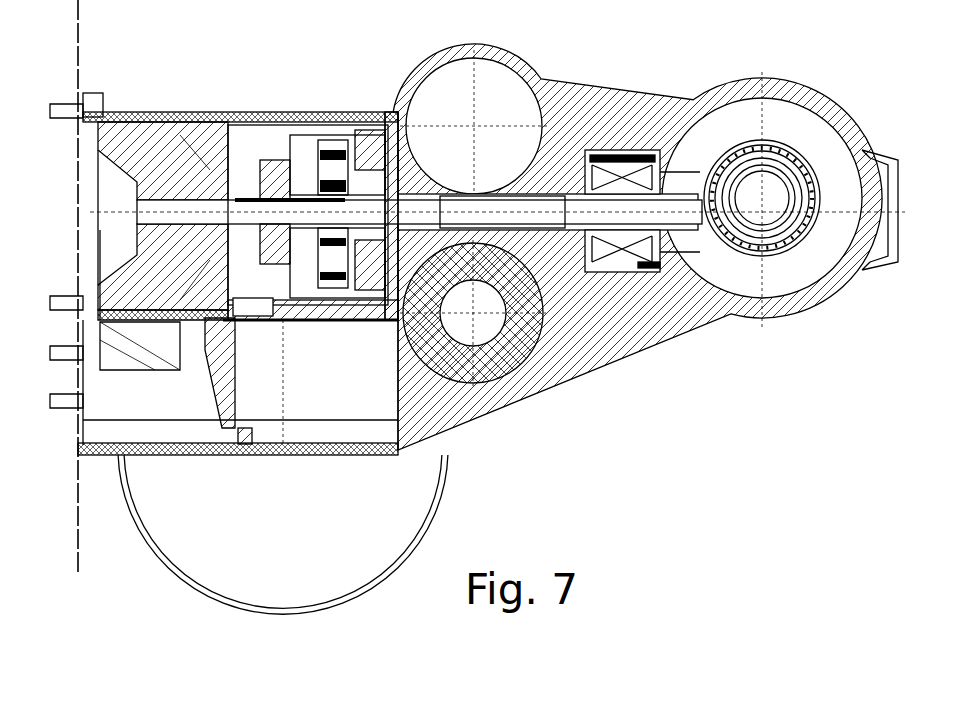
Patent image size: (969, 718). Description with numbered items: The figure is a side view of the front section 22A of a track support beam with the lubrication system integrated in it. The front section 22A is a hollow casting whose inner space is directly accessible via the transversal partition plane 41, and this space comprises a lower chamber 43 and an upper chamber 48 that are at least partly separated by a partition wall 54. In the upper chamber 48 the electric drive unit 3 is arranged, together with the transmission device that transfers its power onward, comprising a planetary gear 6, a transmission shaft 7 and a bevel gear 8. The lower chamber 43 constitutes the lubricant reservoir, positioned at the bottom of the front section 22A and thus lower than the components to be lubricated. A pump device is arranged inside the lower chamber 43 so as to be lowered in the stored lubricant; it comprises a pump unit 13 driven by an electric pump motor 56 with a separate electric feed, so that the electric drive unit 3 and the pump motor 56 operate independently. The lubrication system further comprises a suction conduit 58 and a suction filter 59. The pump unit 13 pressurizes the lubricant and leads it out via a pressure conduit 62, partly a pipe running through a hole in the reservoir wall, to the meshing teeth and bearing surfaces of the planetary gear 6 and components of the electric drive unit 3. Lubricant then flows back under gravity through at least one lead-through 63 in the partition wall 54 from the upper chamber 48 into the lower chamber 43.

The electric drive unit 3 is at (170, 140).
The transmission shaft 7 is at (178, 217).
The planetary gear 6 is at (334, 125).
The upper chamber 48 is at (264, 171).
The bevel gear 8 is at (712, 262).
The front section 22A is at (660, 478).
The pressure conduit 62 is at (393, 282).
The lead-through 63 is at (252, 312).
The pump unit 13 is at (217, 353).
The lower chamber 43 is at (316, 413).
The electric pump motor 56 is at (143, 357).
The partition wall 54 is at (153, 318).
The suction filter 59 is at (244, 440).
The suction conduit 58 is at (235, 423).
The transversal partition plane 41 is at (80, 535).